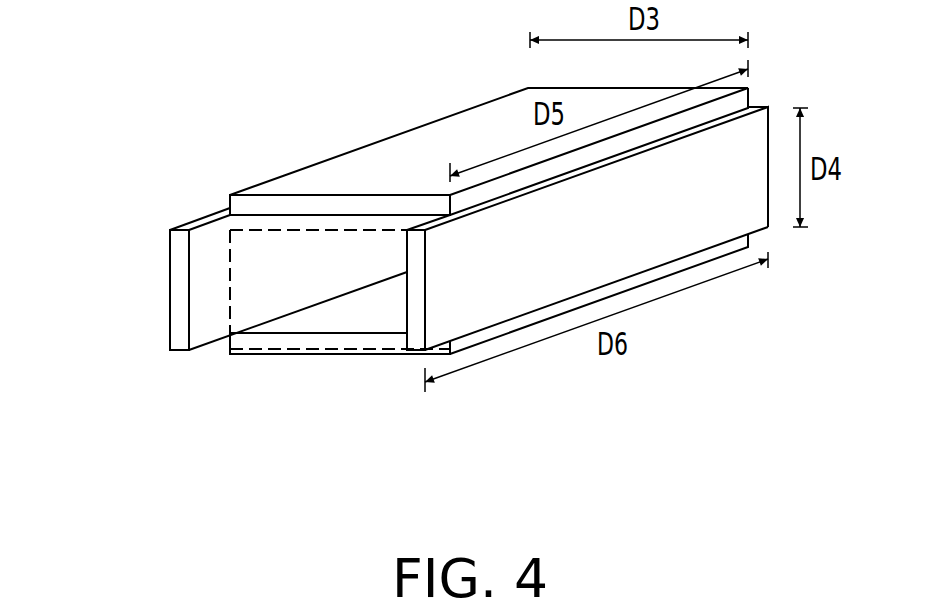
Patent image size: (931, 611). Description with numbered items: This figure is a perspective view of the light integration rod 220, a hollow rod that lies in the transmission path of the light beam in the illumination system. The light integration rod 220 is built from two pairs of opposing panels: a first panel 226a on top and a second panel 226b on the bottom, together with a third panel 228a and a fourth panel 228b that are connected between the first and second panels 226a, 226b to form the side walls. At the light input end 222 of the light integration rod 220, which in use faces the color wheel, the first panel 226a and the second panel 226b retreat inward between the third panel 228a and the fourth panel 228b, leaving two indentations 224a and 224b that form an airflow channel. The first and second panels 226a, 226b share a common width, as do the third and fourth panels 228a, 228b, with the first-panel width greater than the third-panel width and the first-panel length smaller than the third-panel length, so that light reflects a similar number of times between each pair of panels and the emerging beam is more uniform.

The light integration rod 220 is at (705, 483).
The light input end 222 is at (310, 277).
The indentation 224a is at (218, 226).
The indentation 224b is at (214, 350).
The first panel 226a is at (438, 137).
The second panel 226b is at (368, 345).
The third panel 228a is at (182, 289).
The fourth panel 228b is at (417, 337).